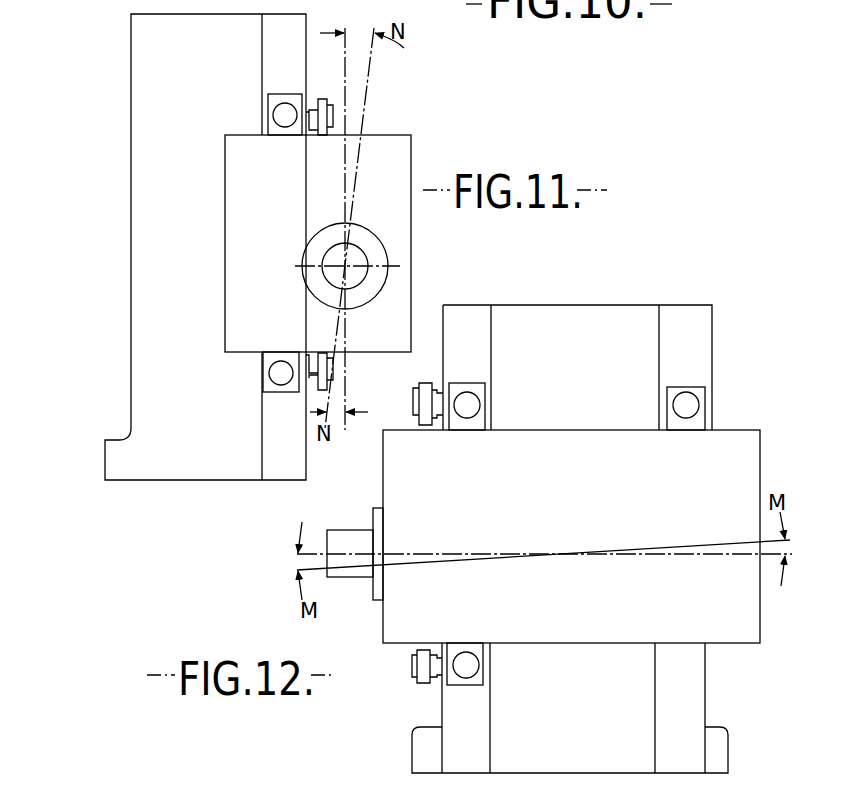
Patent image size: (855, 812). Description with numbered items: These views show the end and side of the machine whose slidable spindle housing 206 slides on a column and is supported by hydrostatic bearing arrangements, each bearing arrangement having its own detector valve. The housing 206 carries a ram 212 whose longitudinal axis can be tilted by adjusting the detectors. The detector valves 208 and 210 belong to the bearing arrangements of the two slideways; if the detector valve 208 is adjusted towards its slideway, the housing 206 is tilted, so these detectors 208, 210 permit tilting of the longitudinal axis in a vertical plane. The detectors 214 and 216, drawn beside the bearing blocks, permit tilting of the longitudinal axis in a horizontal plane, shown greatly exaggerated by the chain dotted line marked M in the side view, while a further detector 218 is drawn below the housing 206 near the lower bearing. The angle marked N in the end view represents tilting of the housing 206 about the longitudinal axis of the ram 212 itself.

In FIG. 11, the slidable spindle housing 206 is at (396, 152).
In FIG. 12, the slidable spindle housing 206 is at (722, 448).
In FIG. 11, the detector valve 208 is at (325, 113).
In FIG. 12, the detector valve 208 is at (473, 405).
In FIG. 12, the detector valve 210 is at (680, 405).
In FIG. 11, the ram 212 is at (356, 262).
In FIG. 12, the ram 212 is at (352, 578).
In FIG. 12, the detector 214 is at (427, 387).
In FIG. 12, the detector 216 is at (412, 668).
In FIG. 12, the bearing 218 is at (478, 670).